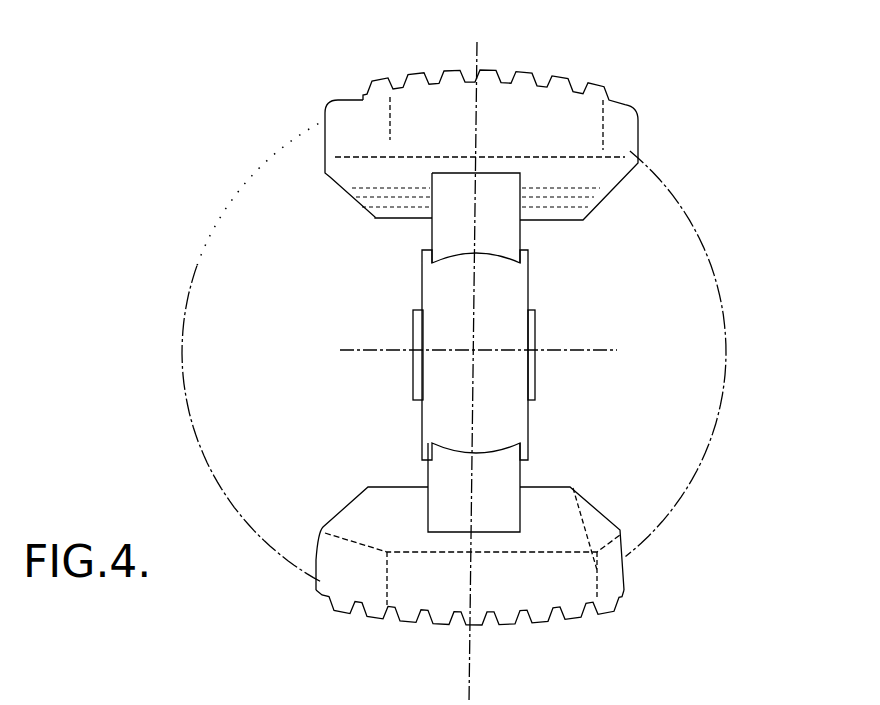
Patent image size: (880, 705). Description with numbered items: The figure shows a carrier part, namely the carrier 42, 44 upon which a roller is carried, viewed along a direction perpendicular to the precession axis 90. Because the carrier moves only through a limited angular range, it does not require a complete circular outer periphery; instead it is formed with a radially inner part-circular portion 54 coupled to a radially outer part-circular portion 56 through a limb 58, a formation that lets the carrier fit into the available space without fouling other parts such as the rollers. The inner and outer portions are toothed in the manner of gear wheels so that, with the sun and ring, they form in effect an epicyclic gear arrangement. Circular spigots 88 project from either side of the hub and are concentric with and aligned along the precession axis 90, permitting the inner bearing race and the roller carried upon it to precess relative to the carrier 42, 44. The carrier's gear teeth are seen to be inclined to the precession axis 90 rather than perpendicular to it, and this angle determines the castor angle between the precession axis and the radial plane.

The carrier 42 is at (554, 322).
The carrier 44 is at (590, 274).
The radially inner part-circular portion 54 is at (633, 128).
The radially outer part-circular portion 56 is at (628, 558).
The limb 58 is at (453, 325).
The circular spigots 88 is at (533, 393).
The precession axis 90 is at (572, 347).